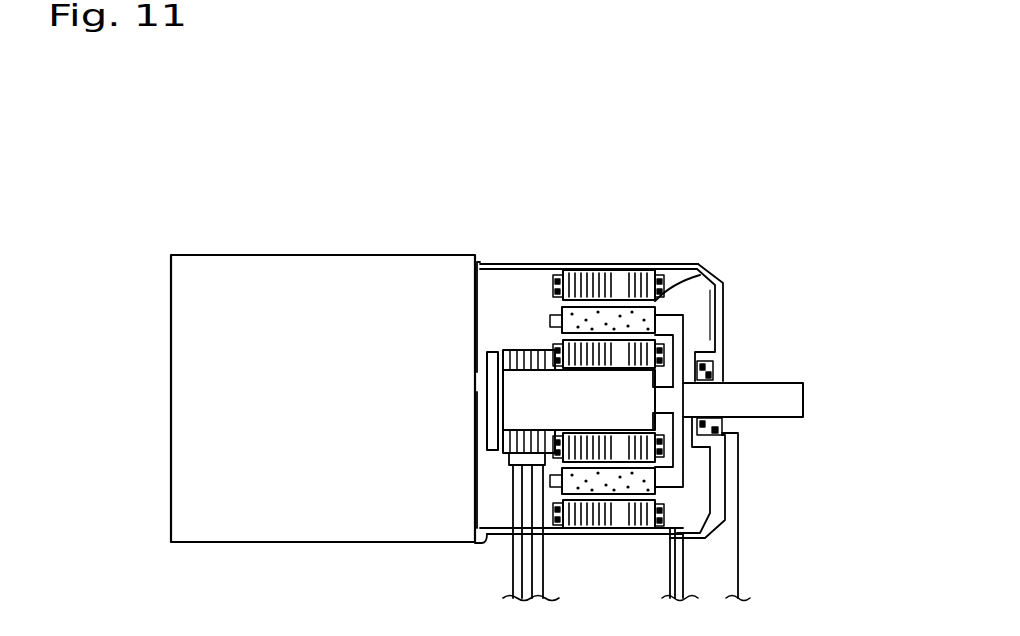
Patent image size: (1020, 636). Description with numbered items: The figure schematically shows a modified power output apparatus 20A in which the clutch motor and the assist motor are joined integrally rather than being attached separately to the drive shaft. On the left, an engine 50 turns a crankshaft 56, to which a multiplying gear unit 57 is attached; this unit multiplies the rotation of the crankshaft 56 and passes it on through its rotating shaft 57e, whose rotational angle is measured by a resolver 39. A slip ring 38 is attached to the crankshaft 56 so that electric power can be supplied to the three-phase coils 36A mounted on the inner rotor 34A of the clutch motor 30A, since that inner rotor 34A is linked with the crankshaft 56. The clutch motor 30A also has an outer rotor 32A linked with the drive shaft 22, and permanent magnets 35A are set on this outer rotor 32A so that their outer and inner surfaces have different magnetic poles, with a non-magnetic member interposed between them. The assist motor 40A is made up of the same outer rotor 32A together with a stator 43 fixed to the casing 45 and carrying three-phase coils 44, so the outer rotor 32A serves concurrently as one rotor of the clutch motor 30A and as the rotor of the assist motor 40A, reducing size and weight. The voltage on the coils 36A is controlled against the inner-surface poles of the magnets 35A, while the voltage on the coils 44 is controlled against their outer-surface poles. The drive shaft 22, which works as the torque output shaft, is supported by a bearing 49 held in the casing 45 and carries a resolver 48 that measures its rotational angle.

The power output apparatus 20A is at (550, 137).
The engine 50 is at (302, 255).
The crankshaft 56 is at (492, 352).
The multiplying gear unit 57 is at (510, 352).
The rotating shaft 57e is at (567, 397).
The slip ring 38 is at (525, 350).
The resolver 39 is at (538, 350).
The stator 43 is at (598, 272).
The inner rotor 34A is at (620, 330).
The three-phase coils 44 is at (668, 317).
The assist motor 40A is at (668, 280).
The permanent magnets 35A is at (696, 268).
The casing 45 is at (712, 272).
The outer rotor 32A is at (718, 290).
The clutch motor 30A is at (693, 332).
The resolver 48 is at (708, 358).
The bearing 49 is at (740, 386).
The drive shaft 22 is at (787, 418).
The three-phase coils 36A is at (728, 411).